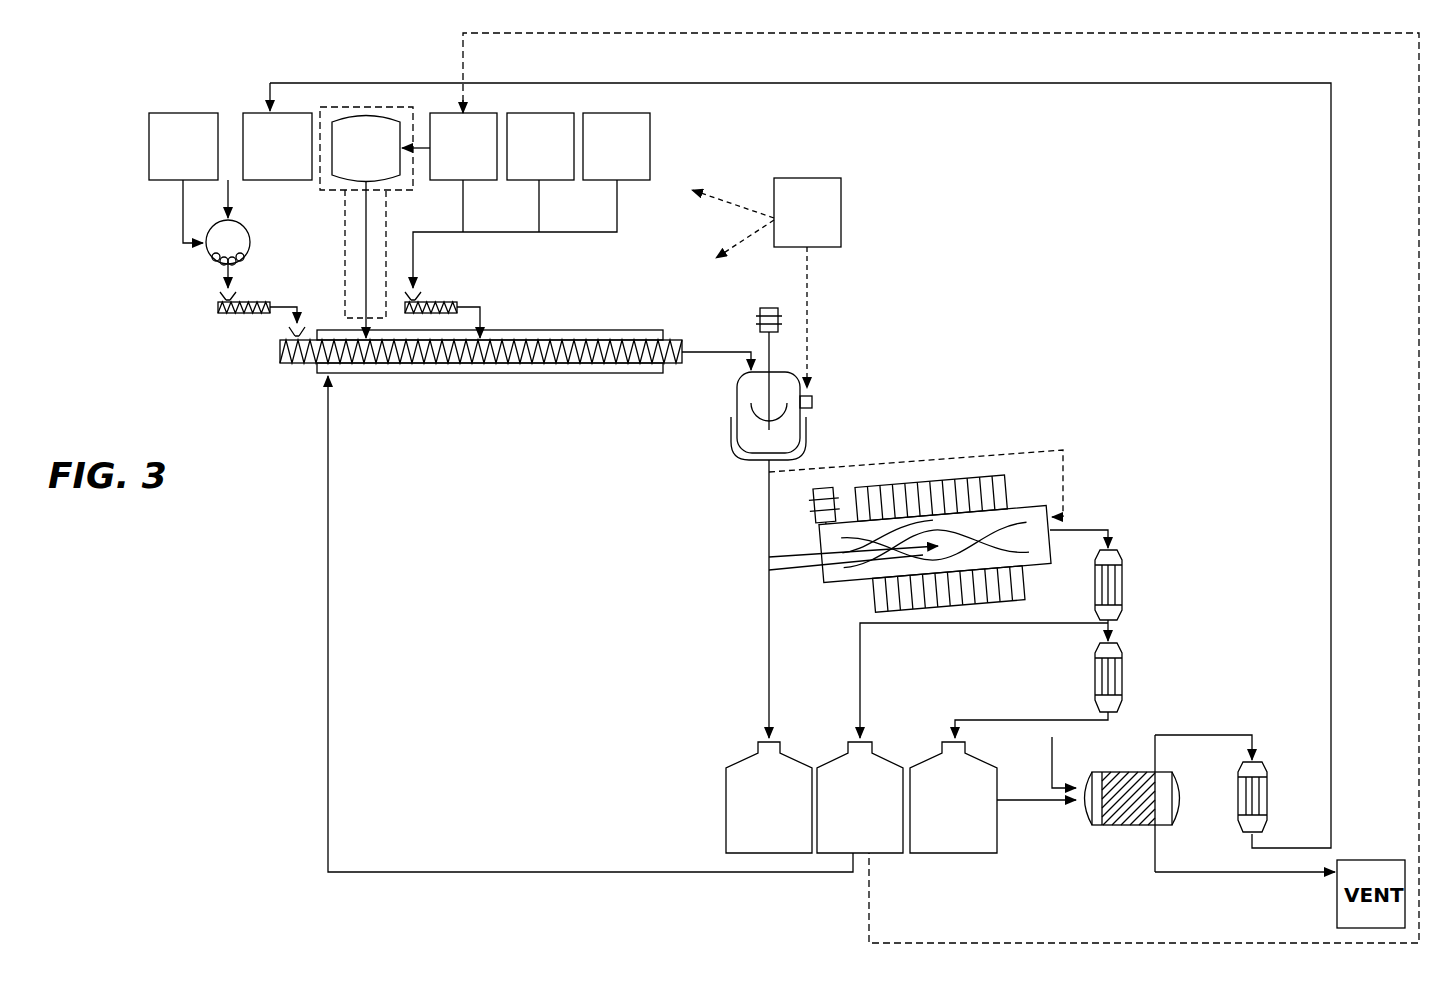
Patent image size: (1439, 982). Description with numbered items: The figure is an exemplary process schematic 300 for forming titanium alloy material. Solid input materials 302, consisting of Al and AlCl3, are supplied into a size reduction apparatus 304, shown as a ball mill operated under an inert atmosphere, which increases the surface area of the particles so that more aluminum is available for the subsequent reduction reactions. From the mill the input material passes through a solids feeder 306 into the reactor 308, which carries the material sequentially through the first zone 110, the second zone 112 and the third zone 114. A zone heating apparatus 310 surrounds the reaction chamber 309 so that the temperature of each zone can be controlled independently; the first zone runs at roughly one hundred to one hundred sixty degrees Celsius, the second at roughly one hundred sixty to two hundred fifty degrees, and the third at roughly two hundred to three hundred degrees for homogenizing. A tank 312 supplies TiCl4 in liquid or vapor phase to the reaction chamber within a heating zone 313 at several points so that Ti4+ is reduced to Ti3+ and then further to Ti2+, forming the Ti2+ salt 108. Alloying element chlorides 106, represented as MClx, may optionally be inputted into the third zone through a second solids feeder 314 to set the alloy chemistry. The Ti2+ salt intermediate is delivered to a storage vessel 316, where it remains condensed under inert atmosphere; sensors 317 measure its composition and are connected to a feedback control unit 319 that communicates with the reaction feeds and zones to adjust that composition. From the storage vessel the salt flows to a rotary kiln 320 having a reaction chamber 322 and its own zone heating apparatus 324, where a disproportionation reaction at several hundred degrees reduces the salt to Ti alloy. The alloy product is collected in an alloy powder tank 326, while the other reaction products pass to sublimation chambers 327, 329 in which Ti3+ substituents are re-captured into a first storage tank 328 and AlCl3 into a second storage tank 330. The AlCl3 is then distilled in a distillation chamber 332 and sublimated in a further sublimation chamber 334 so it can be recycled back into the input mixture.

The process schematic 300 is at (243, 622).
The solid input materials 302 is at (236, 98).
The size reduction apparatus 304 is at (262, 242).
The solids feeder 306 is at (219, 322).
The reactor 308 is at (539, 558).
The reaction chamber 309 is at (570, 330).
The zone heating apparatus 310 is at (650, 330).
The first zone 110 is at (297, 368).
The second zone 112 is at (370, 376).
The third zone 114 is at (505, 376).
The tank 312 is at (372, 112).
The heating zone 313 is at (343, 107).
The solids feeder 314 is at (445, 302).
The alloying element chlorides 106 is at (540, 104).
The storage vessel 316 is at (722, 433).
The sensors 317 is at (812, 402).
The Ti2+ salt 108 is at (775, 523).
The feedback control unit 319 is at (766, 283).
The rotary kiln 320 is at (968, 514).
The reaction chamber 322 is at (885, 532).
The zone heating apparatus 324 is at (940, 543).
The alloy powder tank 326 is at (728, 796).
The sublimation chamber 327 is at (1118, 575).
The first storage tank 328 is at (838, 760).
The sublimation chamber 329 is at (1118, 670).
The second storage tank 330 is at (930, 760).
The distillation chamber 332 is at (1100, 808).
The sublimation chamber 334 is at (1260, 800).